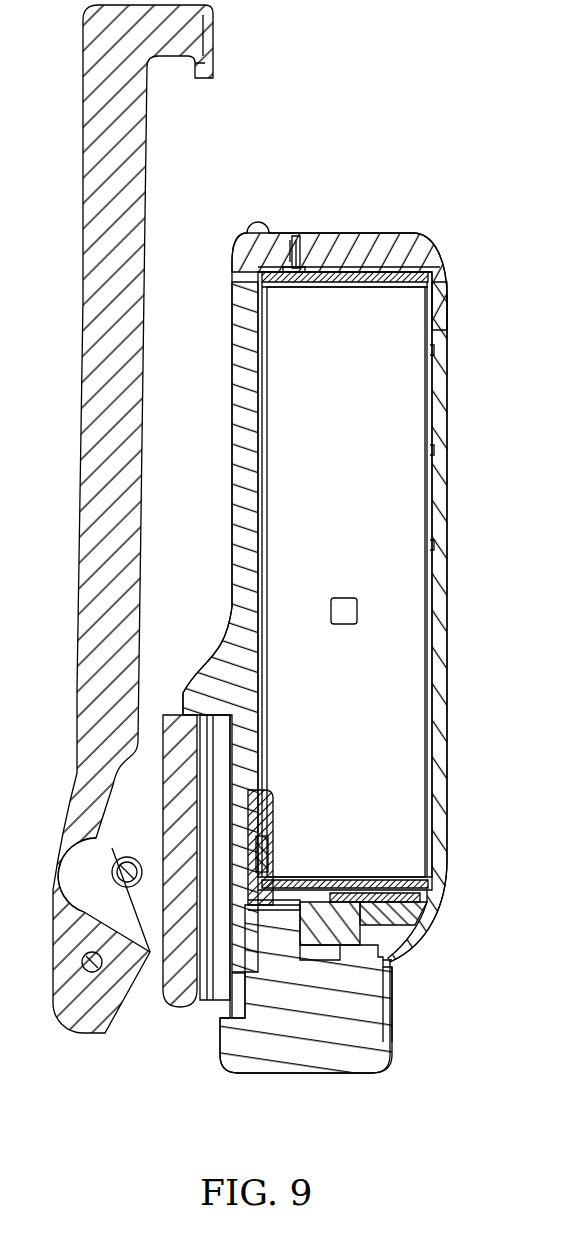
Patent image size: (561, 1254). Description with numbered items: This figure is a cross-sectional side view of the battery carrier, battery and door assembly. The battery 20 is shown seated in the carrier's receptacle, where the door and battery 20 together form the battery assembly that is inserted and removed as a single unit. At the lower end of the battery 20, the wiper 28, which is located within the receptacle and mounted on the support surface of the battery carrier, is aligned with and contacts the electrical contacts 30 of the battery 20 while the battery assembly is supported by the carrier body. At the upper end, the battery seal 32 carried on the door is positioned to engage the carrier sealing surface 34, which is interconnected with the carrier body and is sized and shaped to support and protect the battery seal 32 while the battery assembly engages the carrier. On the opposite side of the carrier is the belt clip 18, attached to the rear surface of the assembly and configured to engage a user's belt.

The belt clip 18 is at (98, 340).
The battery 20 is at (354, 436).
The wiper 28 is at (252, 813).
The electrical contacts 30 is at (262, 850).
The battery seal 32 is at (300, 262).
The carrier sealing surface 34 is at (290, 265).